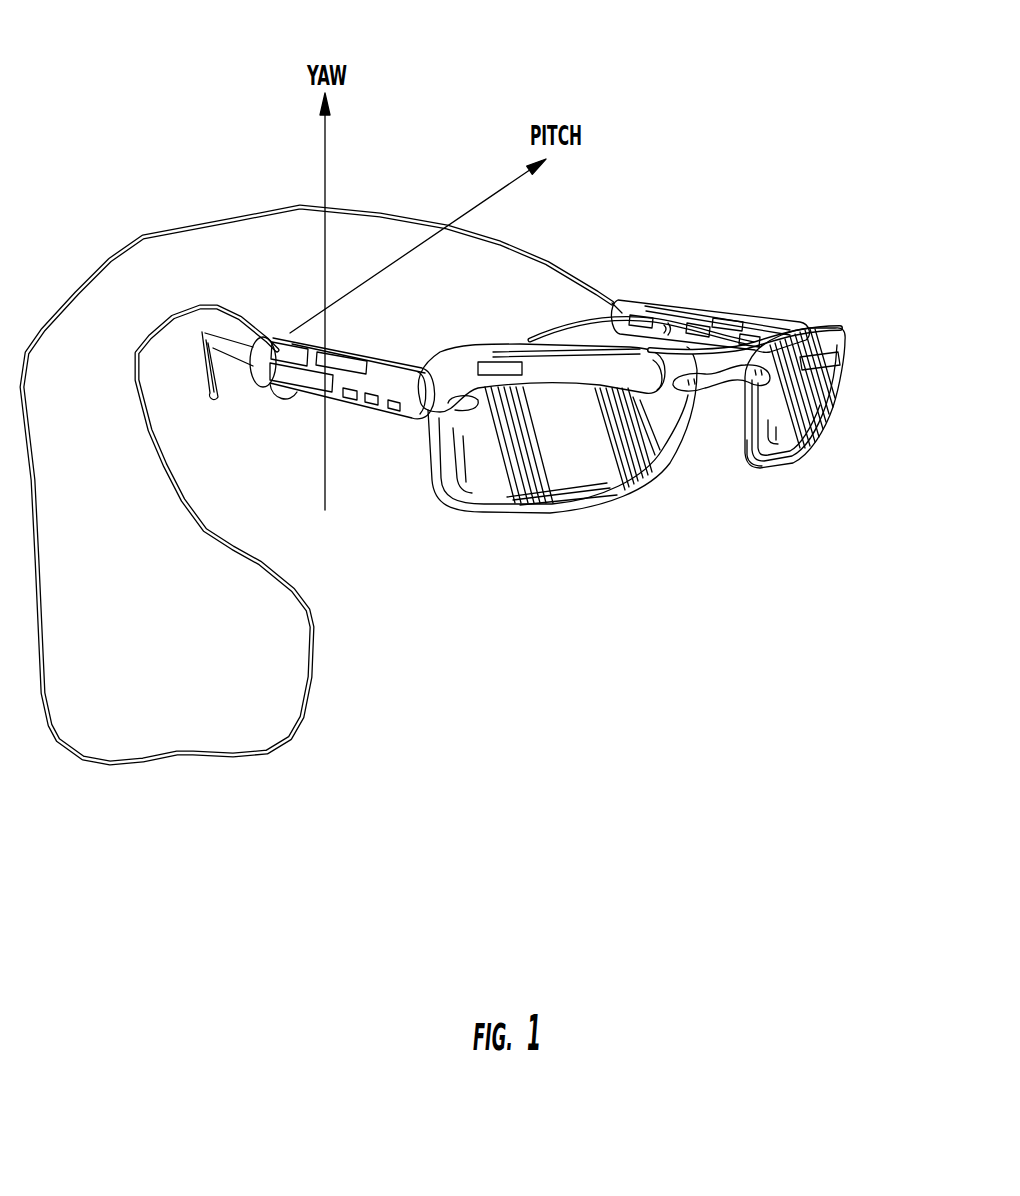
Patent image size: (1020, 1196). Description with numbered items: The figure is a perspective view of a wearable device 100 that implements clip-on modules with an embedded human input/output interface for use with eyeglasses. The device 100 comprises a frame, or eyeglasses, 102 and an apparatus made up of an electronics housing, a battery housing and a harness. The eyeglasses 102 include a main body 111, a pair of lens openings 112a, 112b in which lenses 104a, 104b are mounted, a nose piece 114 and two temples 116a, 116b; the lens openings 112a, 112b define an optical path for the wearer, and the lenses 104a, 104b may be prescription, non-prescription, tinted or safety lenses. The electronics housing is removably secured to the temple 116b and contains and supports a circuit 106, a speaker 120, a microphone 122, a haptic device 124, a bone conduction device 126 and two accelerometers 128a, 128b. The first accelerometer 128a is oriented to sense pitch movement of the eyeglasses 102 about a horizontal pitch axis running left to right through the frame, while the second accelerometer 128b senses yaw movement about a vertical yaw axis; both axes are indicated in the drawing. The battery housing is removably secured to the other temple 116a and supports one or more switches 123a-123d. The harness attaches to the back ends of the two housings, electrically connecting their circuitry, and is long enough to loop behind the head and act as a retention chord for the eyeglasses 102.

The wearable device 100 is at (190, 75).
The frame 102 is at (846, 324).
The lens 104a is at (780, 428).
The lens 104b is at (600, 466).
The circuit 106 is at (315, 386).
The main body 111 is at (752, 466).
The lens opening 112a is at (815, 437).
The lens opening 112b is at (502, 478).
The nose piece 114 is at (727, 373).
The temple 116a is at (567, 332).
The temple 116b is at (197, 330).
The speaker 120 is at (280, 397).
The microphone 122 is at (397, 413).
The switches 123a-123d is at (728, 314).
The haptic device 124 is at (284, 344).
The bone conduction device 126 is at (356, 360).
The first accelerometer 128a is at (350, 402).
The second accelerometer 128b is at (370, 407).